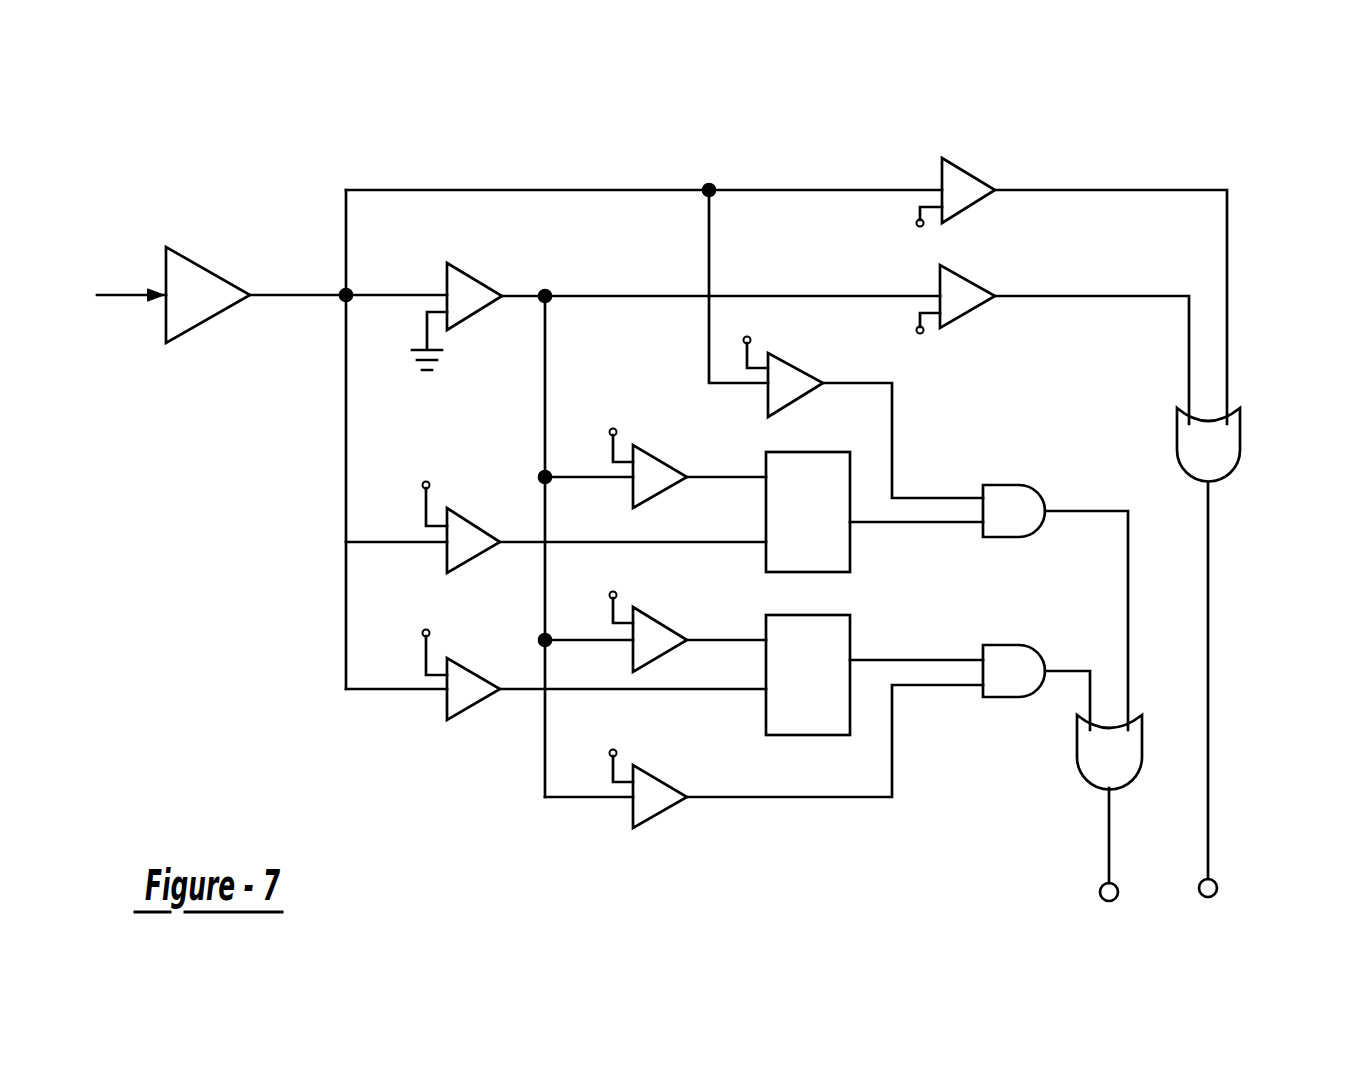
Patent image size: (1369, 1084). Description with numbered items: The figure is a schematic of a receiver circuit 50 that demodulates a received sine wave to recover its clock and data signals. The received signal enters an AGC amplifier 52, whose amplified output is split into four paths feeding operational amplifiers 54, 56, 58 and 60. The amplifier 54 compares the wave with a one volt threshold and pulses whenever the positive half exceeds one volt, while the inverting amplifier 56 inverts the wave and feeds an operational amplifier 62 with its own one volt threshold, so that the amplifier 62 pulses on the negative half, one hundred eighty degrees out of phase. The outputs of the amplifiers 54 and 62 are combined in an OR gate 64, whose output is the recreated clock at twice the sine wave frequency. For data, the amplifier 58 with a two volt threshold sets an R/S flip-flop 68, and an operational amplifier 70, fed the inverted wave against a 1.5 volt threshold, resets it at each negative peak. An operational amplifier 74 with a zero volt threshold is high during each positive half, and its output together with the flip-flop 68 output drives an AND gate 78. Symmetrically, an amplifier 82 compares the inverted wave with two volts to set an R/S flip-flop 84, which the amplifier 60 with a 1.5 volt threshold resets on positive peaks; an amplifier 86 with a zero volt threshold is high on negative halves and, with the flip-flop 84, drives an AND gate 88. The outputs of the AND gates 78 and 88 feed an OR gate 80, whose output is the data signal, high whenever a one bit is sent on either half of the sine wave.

The receiver circuit 50 is at (1193, 158).
The AGC amplifier 52 is at (205, 265).
The operational amplifier 54 is at (972, 170).
The inverting amplifier 56 is at (470, 276).
The operational amplifier 58 is at (472, 518).
The operational amplifier 60 is at (467, 712).
The operational amplifier 62 is at (970, 272).
The OR gate 64 is at (1240, 432).
The R/S flip-flop 68 is at (820, 452).
The operational amplifier 70 is at (660, 455).
The operational amplifier 74 is at (800, 375).
The AND gate 78 is at (1010, 485).
The OR gate 80 is at (1078, 752).
The amplifier 82 is at (660, 618).
The R/S flip-flop 84 is at (793, 735).
The amplifier 86 is at (660, 812).
The AND gate 88 is at (1010, 645).